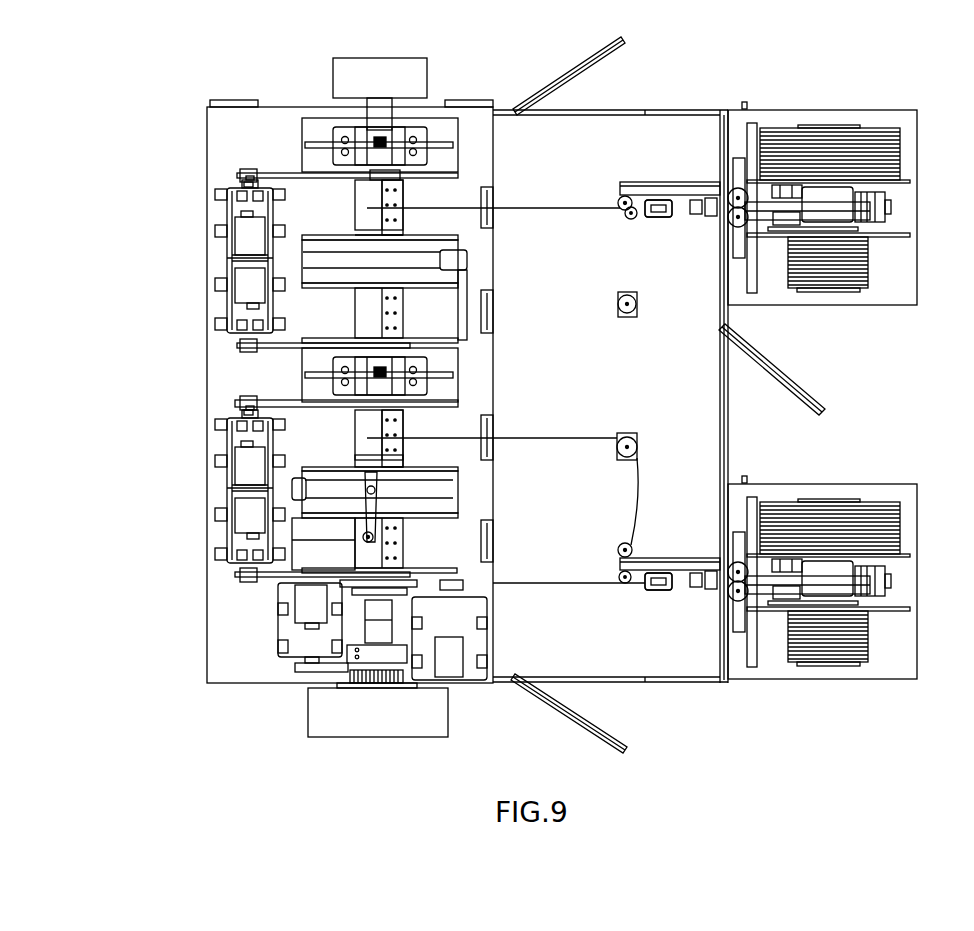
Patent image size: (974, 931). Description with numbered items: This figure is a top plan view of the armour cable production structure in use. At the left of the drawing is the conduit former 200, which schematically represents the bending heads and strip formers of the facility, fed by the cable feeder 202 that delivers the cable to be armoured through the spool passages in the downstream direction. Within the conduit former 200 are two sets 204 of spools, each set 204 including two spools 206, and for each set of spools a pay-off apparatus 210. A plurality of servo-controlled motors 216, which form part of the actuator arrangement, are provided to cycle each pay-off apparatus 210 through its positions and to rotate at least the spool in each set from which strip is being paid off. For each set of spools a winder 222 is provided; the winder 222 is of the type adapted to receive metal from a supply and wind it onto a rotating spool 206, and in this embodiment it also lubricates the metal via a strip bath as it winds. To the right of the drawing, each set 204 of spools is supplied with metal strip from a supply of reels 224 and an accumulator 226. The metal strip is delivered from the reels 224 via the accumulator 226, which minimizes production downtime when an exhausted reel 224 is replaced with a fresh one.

The conduit former 200 is at (175, 577).
The cable feeder 202 is at (346, 79).
The set of spools 204 is at (555, 455).
The spool 206 is at (337, 183).
The pay-off apparatus 210 is at (357, 480).
The servo-controlled motor 216 is at (246, 232).
The winder 222 is at (418, 205).
The reel 224 is at (824, 148).
The accumulator 226 is at (690, 218).